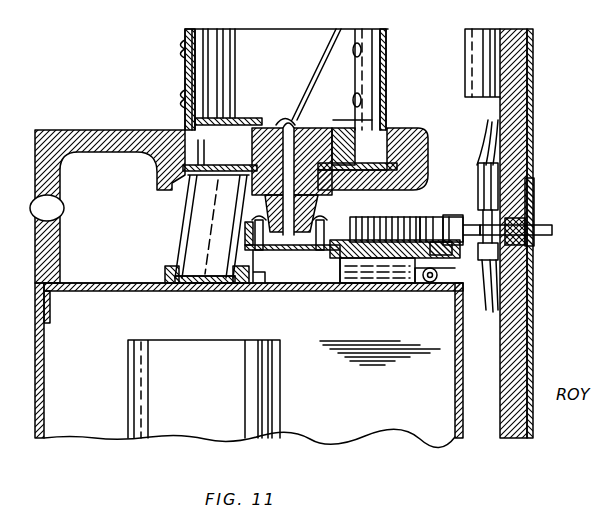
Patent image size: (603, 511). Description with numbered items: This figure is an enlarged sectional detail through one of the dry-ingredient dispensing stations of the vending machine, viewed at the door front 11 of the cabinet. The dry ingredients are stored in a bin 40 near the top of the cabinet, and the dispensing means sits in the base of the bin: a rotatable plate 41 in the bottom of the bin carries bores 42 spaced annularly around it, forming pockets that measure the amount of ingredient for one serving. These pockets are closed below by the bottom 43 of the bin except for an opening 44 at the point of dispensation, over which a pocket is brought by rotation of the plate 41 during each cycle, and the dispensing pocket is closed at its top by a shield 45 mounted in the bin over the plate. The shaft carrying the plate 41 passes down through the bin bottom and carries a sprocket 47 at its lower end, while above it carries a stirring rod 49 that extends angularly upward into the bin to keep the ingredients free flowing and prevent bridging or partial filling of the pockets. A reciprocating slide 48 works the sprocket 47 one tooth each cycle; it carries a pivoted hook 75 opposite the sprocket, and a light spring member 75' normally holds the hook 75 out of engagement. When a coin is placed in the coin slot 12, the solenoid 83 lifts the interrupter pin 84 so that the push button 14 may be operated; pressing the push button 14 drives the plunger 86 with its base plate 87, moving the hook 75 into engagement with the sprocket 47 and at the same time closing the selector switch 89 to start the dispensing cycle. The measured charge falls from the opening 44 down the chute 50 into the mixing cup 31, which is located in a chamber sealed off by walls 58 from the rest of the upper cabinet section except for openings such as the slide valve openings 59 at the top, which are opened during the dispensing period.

The door front 11 is at (533, 100).
The coin slot 12 is at (470, 66).
The push button 14 is at (540, 231).
The mixing cup 31 is at (280, 352).
The bin 40 is at (387, 69).
The rotatable plate 41 is at (307, 128).
The bore 42 is at (372, 134).
The bottom of the bin 43 is at (350, 183).
The opening 44 is at (228, 168).
The shield 45 is at (230, 118).
The sprocket 47 is at (259, 251).
The reciprocating slide 48 is at (340, 246).
The stirring rod 49 is at (329, 58).
The chute 50 is at (198, 199).
The walls 58 is at (107, 293).
The slide valve opening 59 is at (202, 289).
The pivoted hook 75 is at (372, 212).
The light spring member 75' is at (428, 210).
The solenoid 83 is at (492, 180).
The interrupter pin 84 is at (478, 200).
The plunger 86 is at (436, 273).
The base plate 87 is at (458, 215).
The selector switch 89 is at (498, 260).